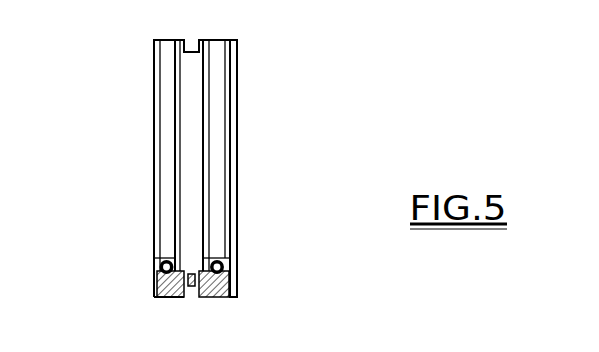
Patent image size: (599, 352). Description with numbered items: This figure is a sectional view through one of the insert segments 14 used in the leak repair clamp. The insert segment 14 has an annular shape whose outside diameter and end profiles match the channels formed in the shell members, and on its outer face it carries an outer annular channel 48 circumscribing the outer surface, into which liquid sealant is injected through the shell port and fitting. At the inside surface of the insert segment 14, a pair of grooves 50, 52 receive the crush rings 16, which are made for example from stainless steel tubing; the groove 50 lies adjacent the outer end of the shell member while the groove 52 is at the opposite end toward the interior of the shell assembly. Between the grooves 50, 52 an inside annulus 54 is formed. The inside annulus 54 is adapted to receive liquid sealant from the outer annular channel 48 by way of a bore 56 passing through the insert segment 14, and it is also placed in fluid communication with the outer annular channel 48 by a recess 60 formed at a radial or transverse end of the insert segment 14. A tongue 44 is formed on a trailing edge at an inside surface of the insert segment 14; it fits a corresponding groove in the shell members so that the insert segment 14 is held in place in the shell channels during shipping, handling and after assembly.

The insert segment 14 is at (155, 170).
The crush ring 16 is at (217, 182).
The tongue 44 is at (235, 267).
The outer annular channel 48 is at (193, 298).
The groove 50 is at (167, 80).
The groove 52 is at (218, 77).
The inside annulus 54 is at (198, 135).
The bore 56 is at (160, 279).
The recess 60 is at (190, 43).